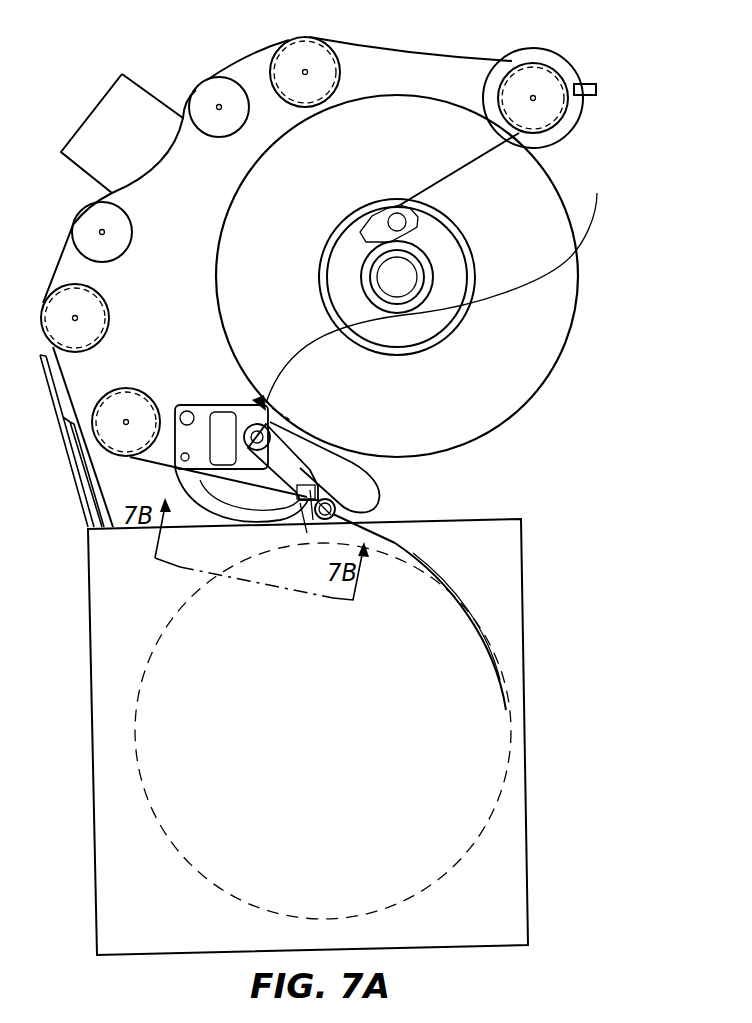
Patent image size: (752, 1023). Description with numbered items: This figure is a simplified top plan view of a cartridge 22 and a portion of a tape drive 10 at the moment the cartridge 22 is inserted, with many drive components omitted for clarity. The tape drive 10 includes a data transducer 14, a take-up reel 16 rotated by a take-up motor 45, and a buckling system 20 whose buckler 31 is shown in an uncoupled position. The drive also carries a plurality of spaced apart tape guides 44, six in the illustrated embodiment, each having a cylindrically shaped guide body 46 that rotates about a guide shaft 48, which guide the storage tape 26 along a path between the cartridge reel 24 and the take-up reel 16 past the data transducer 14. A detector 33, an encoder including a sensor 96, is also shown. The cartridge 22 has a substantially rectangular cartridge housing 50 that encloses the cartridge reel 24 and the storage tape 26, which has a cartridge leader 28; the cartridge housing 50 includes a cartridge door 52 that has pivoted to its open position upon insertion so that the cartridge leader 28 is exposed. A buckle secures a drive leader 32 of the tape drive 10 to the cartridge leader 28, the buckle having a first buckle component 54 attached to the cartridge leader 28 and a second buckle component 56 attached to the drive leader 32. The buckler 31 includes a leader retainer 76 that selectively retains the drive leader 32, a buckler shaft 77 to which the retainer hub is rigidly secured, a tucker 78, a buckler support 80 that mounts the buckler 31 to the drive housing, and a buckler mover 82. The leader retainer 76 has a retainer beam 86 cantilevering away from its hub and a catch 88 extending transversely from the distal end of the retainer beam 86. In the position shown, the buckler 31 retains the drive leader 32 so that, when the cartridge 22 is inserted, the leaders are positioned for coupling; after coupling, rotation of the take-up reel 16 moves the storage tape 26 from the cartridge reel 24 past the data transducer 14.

The tape drive 10 is at (446, 281).
The data transducer 14 is at (118, 104).
The take-up reel 16 is at (592, 280).
The buckling system 20 is at (464, 216).
The cartridge 22 is at (314, 737).
The cartridge reel 24 is at (508, 702).
The storage tape 26 is at (473, 598).
The cartridge leader 28 is at (506, 605).
The buckler 31 is at (440, 268).
The drive leader 32 is at (463, 508).
The detector 33 is at (563, 140).
The tape guide 44 is at (220, 70).
The take-up motor 45 is at (408, 272).
The guide body 46 is at (303, 37).
The guide shaft 48 is at (216, 106).
The cartridge housing 50 is at (92, 752).
The cartridge door 52 is at (78, 474).
The first buckle component 54 is at (416, 543).
The second buckle component 56 is at (350, 522).
The leader retainer 76 is at (364, 465).
The buckler shaft 77 is at (268, 410).
The tucker 78 is at (392, 494).
The buckler support 80 is at (225, 407).
The buckler mover 82 is at (266, 514).
The retainer beam 86 is at (282, 465).
The catch 88 is at (307, 522).
The sensor 96 is at (586, 84).